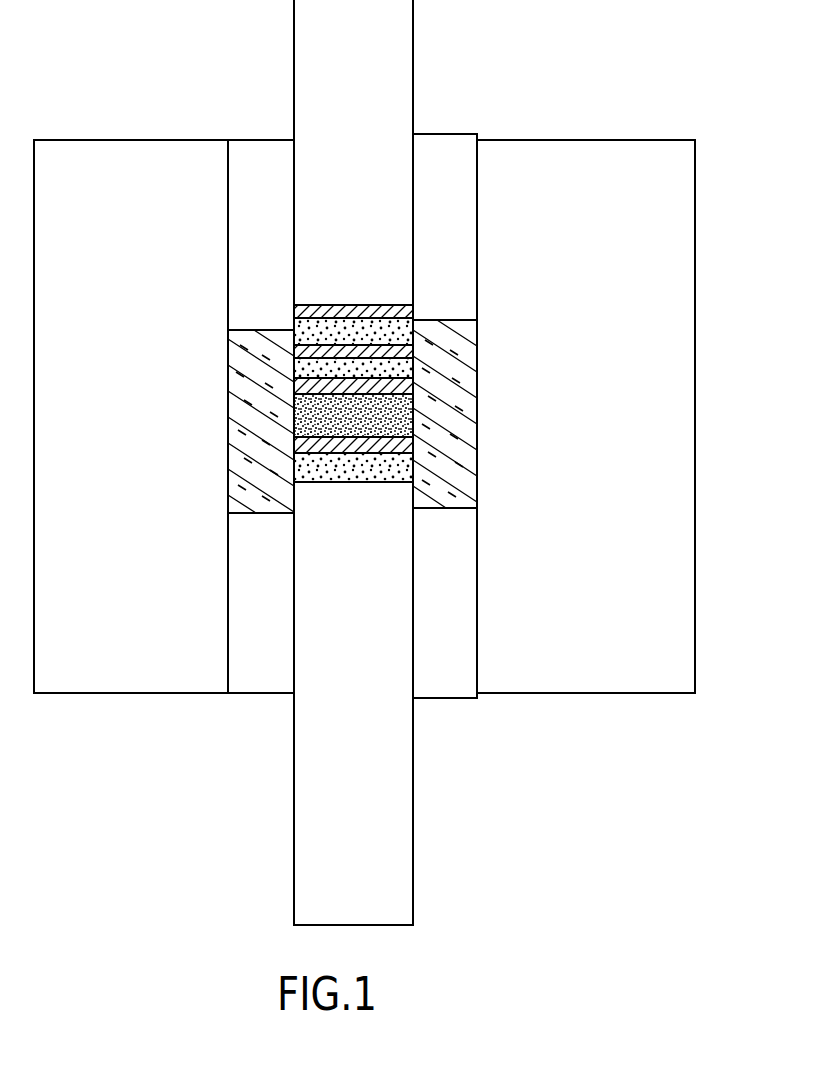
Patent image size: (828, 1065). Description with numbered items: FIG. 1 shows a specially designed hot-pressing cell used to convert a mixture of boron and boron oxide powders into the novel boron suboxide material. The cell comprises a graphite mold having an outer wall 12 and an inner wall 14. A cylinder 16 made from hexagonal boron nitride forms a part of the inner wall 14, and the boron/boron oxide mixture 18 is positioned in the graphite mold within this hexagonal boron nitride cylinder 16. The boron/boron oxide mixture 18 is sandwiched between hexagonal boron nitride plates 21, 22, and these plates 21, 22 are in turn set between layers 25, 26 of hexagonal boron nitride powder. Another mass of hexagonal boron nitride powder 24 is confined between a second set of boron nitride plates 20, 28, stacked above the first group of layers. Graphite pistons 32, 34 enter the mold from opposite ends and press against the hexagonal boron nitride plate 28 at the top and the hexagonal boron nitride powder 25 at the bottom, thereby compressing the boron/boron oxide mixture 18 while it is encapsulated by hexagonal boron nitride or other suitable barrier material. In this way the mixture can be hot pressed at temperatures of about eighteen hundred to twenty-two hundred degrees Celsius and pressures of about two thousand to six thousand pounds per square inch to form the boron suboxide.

The outer wall 12 is at (683, 326).
The inner wall 14 is at (462, 265).
The cylinder 16 is at (462, 408).
The boron/boron oxide mixture 18 is at (430, 425).
The boron nitride plate 20 is at (415, 352).
The hexagonal boron nitride plate 21 is at (413, 386).
The hexagonal boron nitride plate 22 is at (417, 460).
The hexagonal boron nitride powder 24 is at (295, 332).
The layer of hexagonal boron nitride powder 25 is at (300, 463).
The layer of hexagonal boron nitride powder 26 is at (305, 370).
The boron nitride plate 28 is at (405, 305).
The graphite piston 32 is at (405, 24).
The graphite piston 34 is at (405, 803).